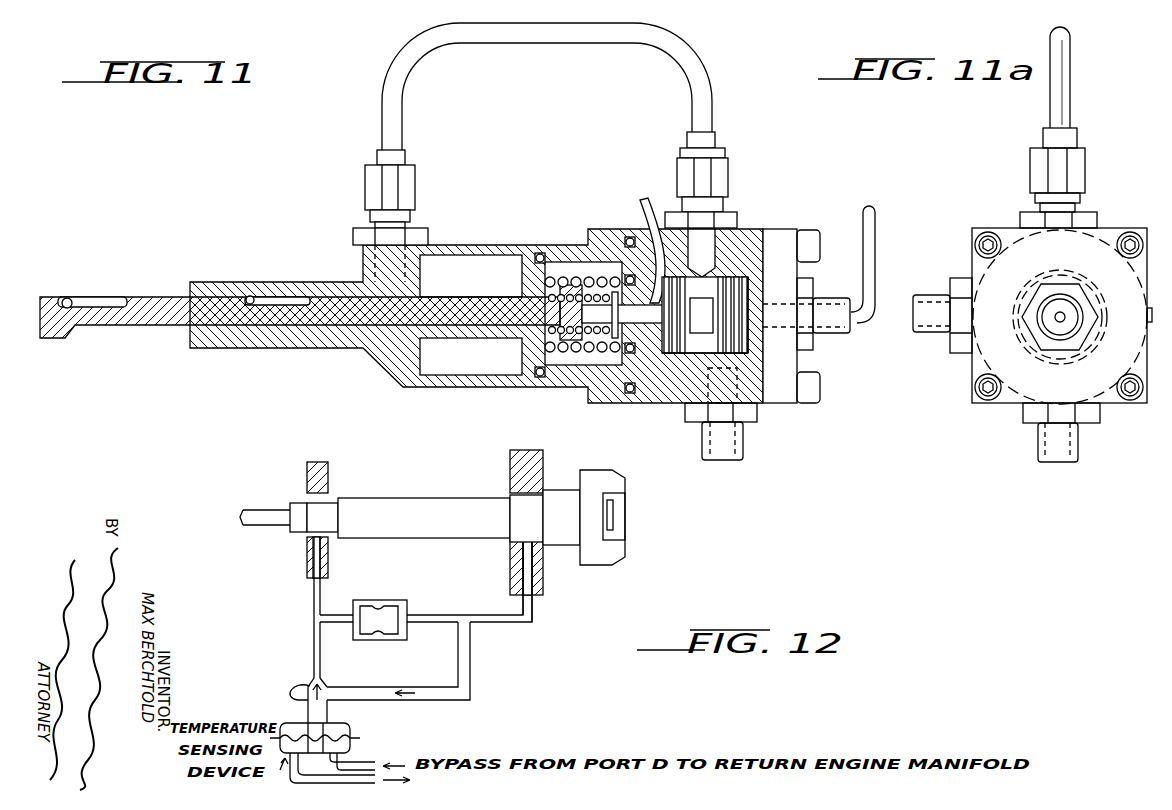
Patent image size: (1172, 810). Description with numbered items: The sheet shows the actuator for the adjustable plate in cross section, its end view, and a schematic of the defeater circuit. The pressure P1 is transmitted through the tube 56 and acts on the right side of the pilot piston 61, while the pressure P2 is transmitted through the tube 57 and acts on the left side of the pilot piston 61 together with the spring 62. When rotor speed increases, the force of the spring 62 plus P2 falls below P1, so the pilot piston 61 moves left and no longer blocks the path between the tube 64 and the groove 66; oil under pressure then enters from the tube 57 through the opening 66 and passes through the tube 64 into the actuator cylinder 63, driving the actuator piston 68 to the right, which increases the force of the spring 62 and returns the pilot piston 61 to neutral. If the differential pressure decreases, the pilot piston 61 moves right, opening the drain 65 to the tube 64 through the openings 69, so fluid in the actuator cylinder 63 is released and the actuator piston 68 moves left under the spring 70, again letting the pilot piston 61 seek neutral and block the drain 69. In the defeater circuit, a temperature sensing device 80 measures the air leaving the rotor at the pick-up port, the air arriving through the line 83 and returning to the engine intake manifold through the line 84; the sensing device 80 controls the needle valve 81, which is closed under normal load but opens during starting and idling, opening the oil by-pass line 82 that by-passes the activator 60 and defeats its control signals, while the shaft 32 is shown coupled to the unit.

In FIG. 12, the shaft 32 is at (268, 512).
In FIG. 11, the tube 56 is at (868, 252).
In FIG. 11a, the tube 56 is at (1064, 320).
In FIG. 12, the tube 56 is at (534, 611).
In FIG. 11, the tube 57 is at (645, 212).
In FIG. 11, the activator 60 is at (556, 134).
In FIG. 11a, the activator 60 is at (1083, 59).
In FIG. 12, the activator 60 is at (374, 598).
In FIG. 11, the pilot piston 61 is at (762, 288).
In FIG. 11, the spring 62 is at (576, 294).
In FIG. 11, the actuator cylinder 63 is at (467, 372).
In FIG. 11, the tube 64 is at (557, 44).
In FIG. 11a, the tube 64 is at (1077, 111).
In FIG. 11, the drain 65 is at (744, 444).
In FIG. 11, the groove (opening) 66 is at (688, 348).
In FIG. 11, the actuator piston 68 is at (142, 305).
In FIG. 11, the openings (drain) 69 is at (740, 355).
In FIG. 11, the spring 70 is at (588, 280).
In FIG. 12, the temperature sensing device 80 is at (275, 773).
In FIG. 12, the needle valve 81 is at (312, 680).
In FIG. 12, the oil by-pass line 82 is at (398, 661).
In FIG. 12, the line 83 is at (337, 738).
In FIG. 12, the line 84 is at (350, 768).
In FIG. 11, the pressure P1 is at (870, 194).
In FIG. 12, the pressure P1 is at (492, 554).
In FIG. 11, the pressure P2 is at (670, 205).
In FIG. 12, the pressure P2 is at (307, 540).